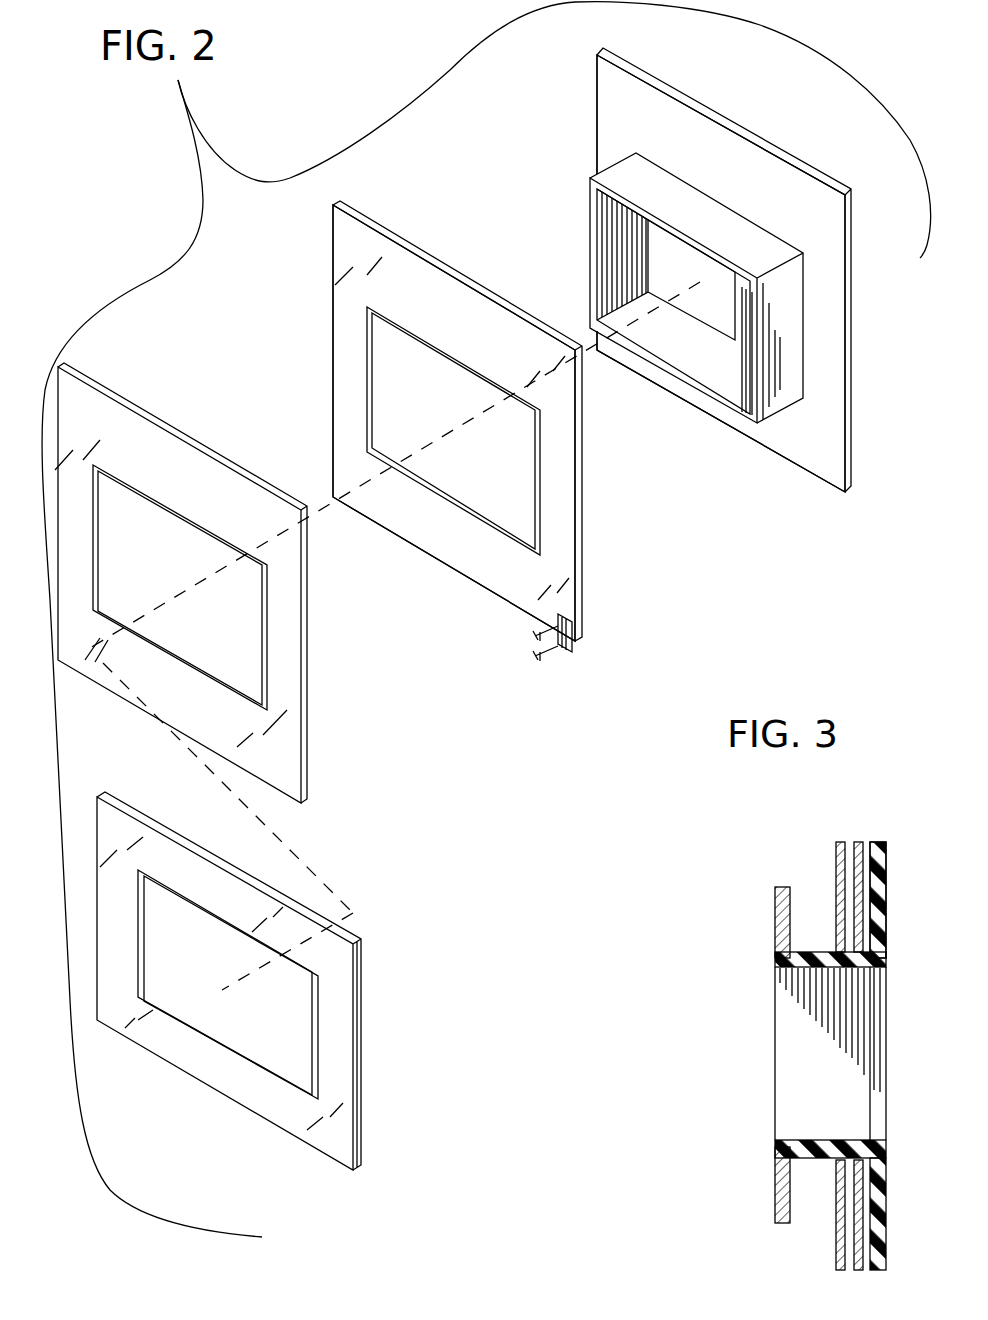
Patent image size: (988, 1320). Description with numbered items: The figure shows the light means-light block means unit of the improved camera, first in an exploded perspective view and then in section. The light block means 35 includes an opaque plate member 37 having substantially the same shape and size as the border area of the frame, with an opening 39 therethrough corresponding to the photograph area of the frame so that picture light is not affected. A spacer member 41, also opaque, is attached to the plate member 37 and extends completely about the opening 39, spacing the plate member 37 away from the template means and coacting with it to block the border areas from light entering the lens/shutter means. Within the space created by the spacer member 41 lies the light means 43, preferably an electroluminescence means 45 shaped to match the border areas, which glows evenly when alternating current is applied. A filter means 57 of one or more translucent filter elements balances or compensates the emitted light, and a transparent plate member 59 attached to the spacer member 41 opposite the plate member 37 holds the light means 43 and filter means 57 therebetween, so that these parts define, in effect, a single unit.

In FIG. 2, the light block means 35 is at (782, 156).
In FIG. 3, the light block means 35 is at (937, 838).
In FIG. 2, the plate member 37 is at (822, 340).
In FIG. 3, the plate member 37 is at (880, 893).
In FIG. 2, the opening 39 is at (652, 282).
In FIG. 3, the opening 39 is at (885, 975).
In FIG. 2, the spacer member 41 is at (778, 372).
In FIG. 3, the spacer member 41 is at (837, 1015).
In FIG. 2, the light means 43 is at (345, 283).
In FIG. 2, the electroluminescence means 45 is at (560, 512).
In FIG. 3, the electroluminescence means 45 is at (858, 842).
In FIG. 2, the filter means 57 is at (295, 697).
In FIG. 3, the filter means 57 is at (838, 862).
In FIG. 2, the transparent plate member 59 is at (340, 1027).
In FIG. 3, the transparent plate member 59 is at (775, 908).